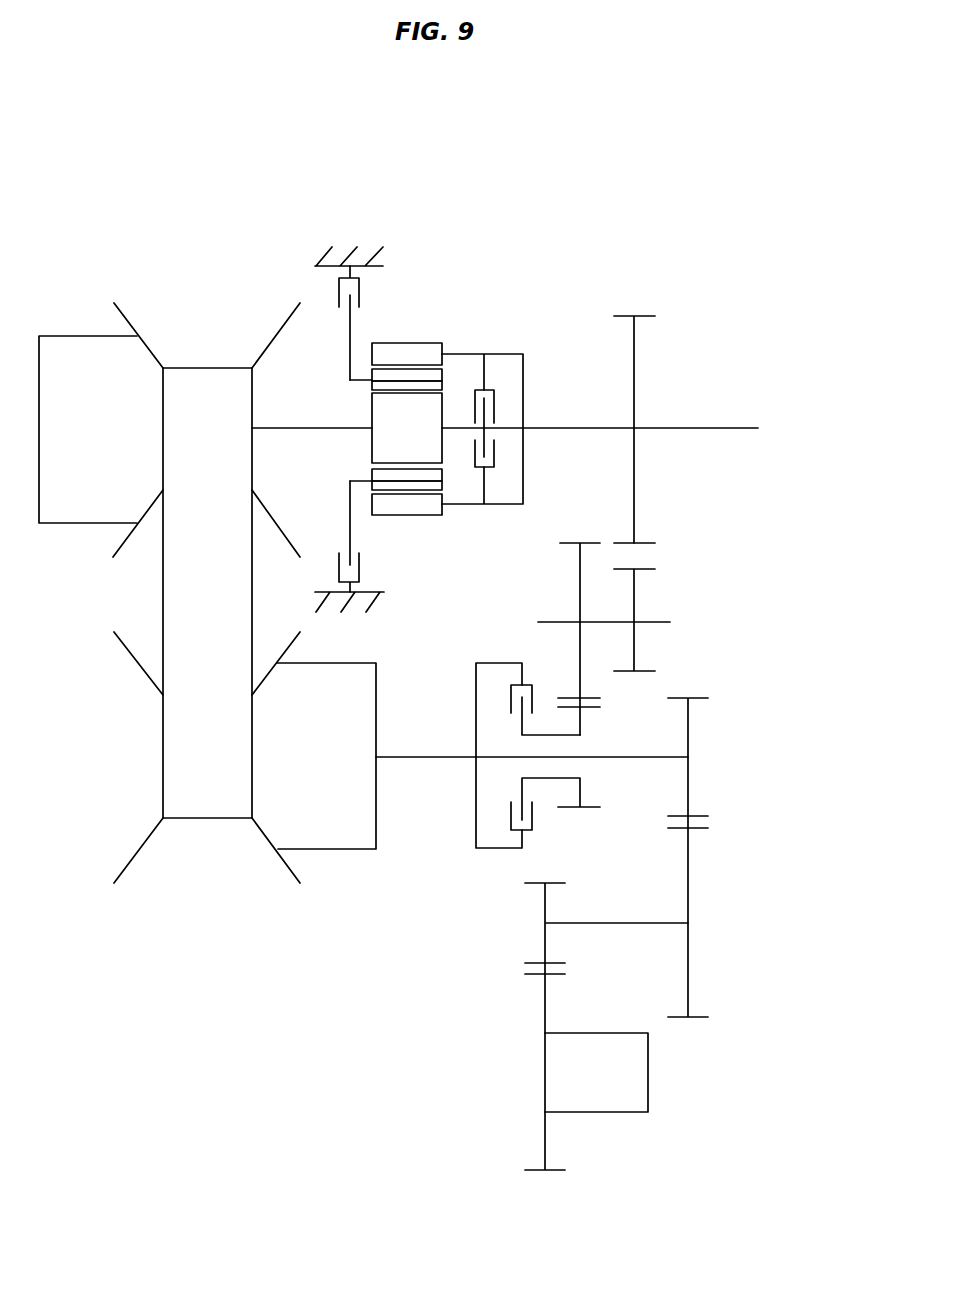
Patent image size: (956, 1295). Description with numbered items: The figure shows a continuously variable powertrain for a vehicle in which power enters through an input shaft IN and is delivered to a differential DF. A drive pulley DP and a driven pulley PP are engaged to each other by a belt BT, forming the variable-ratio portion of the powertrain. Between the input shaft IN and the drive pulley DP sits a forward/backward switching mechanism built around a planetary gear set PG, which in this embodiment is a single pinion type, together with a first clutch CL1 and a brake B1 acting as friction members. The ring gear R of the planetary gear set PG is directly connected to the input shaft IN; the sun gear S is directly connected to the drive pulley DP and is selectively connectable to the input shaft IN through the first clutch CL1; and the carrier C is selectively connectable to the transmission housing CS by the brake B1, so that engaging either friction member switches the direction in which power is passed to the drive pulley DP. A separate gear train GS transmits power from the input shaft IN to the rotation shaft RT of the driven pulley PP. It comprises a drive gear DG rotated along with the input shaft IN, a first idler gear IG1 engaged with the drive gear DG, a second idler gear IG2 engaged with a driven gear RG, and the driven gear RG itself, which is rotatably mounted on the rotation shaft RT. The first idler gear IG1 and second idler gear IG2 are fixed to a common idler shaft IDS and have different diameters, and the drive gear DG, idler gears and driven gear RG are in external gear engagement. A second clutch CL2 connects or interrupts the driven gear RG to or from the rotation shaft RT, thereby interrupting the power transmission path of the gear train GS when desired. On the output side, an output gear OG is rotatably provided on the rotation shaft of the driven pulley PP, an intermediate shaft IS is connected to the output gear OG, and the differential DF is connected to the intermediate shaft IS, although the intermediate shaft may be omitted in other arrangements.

The drive pulley DP is at (128, 320).
The belt BT is at (163, 600).
The driven pulley PP is at (126, 868).
The input shaft IN is at (722, 429).
The transmission housing CS is at (347, 253).
The brake B1 is at (339, 293).
The planetary gear set PG is at (405, 370).
The ring gear R is at (415, 343).
The carrier C is at (350, 353).
The sun gear S is at (372, 416).
The first clutch CL1 is at (490, 390).
The gear train GS is at (655, 686).
The drive gear DG is at (655, 545).
The first idler gear IG1 is at (655, 570).
The idler shaft IDS is at (538, 621).
The second idler gear IG2 is at (585, 697).
The driven gear RG is at (616, 755).
The second clutch CL2 is at (502, 822).
The rotation shaft RT is at (437, 760).
The output gear OG is at (700, 812).
The intermediate shaft IS is at (665, 923).
The differential DF is at (648, 1070).